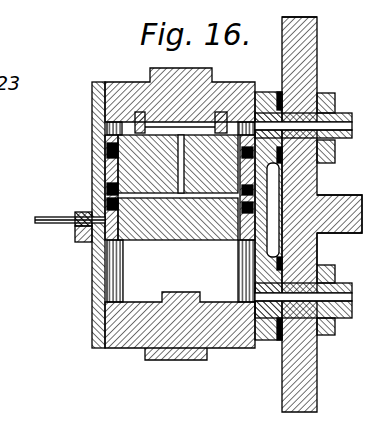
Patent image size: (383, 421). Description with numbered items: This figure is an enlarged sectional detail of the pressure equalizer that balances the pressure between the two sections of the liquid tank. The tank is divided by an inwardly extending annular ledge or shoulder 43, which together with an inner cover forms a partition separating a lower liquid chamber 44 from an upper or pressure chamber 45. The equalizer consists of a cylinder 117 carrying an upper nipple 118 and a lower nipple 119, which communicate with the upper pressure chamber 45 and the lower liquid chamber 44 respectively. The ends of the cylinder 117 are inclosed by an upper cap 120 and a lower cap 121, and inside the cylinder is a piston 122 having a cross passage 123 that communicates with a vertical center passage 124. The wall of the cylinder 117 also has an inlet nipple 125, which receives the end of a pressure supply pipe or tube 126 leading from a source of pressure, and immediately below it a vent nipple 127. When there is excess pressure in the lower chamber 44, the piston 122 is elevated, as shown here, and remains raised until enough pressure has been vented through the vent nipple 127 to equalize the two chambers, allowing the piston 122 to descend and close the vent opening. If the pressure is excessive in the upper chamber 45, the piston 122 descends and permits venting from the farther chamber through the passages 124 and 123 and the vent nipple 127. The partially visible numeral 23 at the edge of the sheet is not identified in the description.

The slide bar 23 is at (290, 33).
The upper or pressure chamber 45 is at (322, 214).
The annular ledge or shoulder 43 is at (314, 193).
The lower liquid chamber 44 is at (322, 250).
The cylinder 117 is at (93, 97).
The upper nipple 118 is at (358, 113).
The lower nipple 119 is at (345, 318).
The upper cap 120 is at (152, 69).
The lower cap 121 is at (148, 362).
The piston 122 is at (95, 283).
The cross passage 123 is at (162, 197).
The vertical center passage 124 is at (178, 198).
The inlet nipple 125 is at (82, 212).
The pressure supply pipe or tube 126 is at (48, 217).
The vent nipple 127 is at (80, 243).